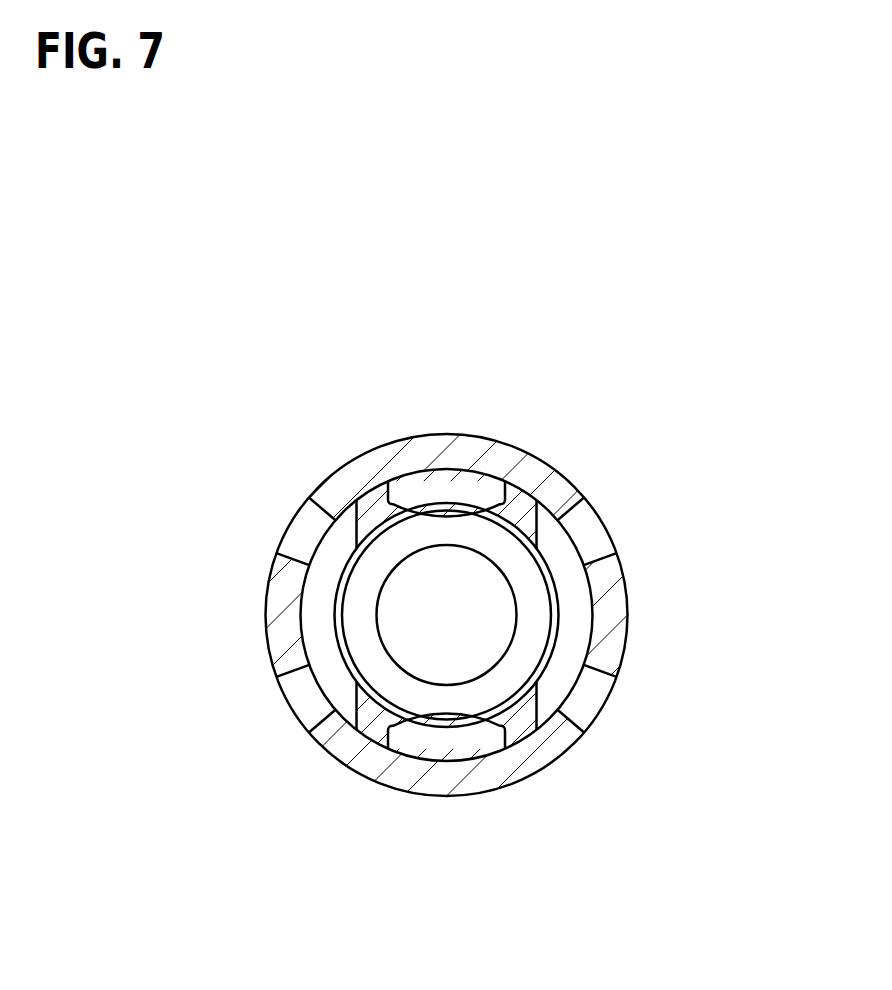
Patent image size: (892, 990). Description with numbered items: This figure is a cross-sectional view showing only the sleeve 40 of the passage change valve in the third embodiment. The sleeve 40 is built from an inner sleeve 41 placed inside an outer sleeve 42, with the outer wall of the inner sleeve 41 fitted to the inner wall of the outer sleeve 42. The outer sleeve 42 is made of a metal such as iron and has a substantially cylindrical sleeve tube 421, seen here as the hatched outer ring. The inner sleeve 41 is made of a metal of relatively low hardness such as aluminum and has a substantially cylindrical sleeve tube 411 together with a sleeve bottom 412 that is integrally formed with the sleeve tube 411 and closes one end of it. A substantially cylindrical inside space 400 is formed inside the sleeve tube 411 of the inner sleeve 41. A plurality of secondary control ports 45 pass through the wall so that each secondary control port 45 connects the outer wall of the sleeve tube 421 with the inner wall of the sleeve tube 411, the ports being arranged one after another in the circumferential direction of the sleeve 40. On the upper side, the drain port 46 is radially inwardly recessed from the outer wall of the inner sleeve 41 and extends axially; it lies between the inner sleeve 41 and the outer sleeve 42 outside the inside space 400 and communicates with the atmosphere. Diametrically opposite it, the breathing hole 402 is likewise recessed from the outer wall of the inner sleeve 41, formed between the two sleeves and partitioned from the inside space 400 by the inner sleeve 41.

The sleeve 40 is at (455, 363).
The outer sleeve 42 is at (503, 455).
The sleeve tube 421 is at (557, 470).
The secondary control port 45 is at (298, 523).
The inner sleeve 41 is at (446, 599).
The sleeve tube 411 is at (363, 507).
The sleeve bottom 412 is at (493, 613).
The inside space 400 is at (403, 615).
The drain port 46 is at (426, 480).
The breathing hole 402 is at (442, 752).